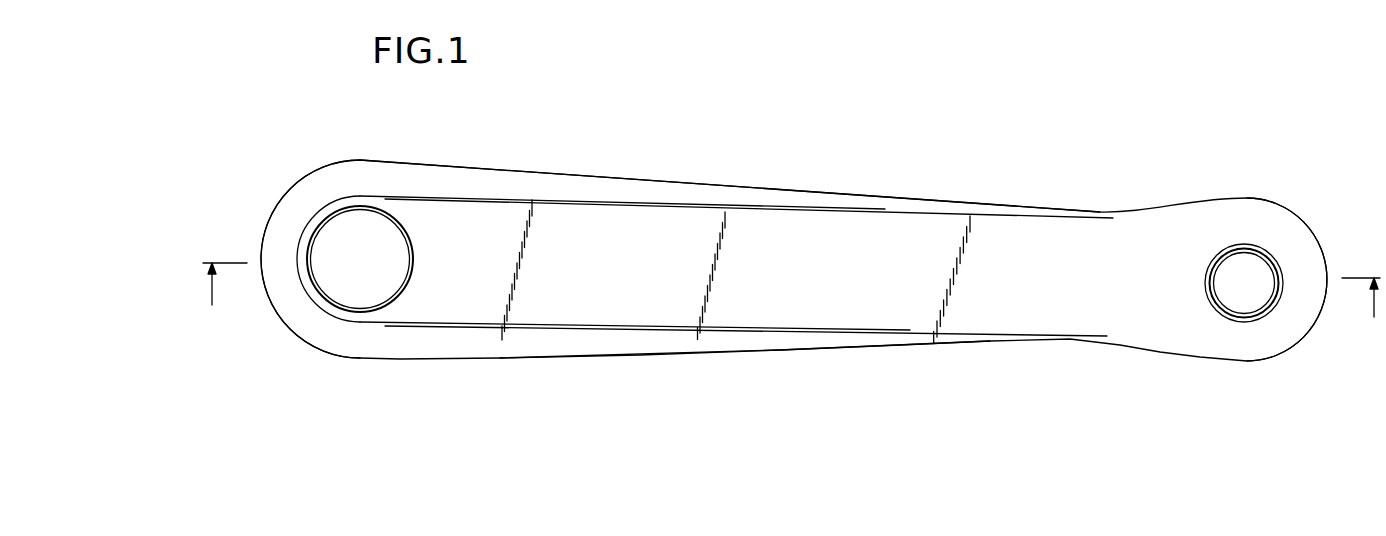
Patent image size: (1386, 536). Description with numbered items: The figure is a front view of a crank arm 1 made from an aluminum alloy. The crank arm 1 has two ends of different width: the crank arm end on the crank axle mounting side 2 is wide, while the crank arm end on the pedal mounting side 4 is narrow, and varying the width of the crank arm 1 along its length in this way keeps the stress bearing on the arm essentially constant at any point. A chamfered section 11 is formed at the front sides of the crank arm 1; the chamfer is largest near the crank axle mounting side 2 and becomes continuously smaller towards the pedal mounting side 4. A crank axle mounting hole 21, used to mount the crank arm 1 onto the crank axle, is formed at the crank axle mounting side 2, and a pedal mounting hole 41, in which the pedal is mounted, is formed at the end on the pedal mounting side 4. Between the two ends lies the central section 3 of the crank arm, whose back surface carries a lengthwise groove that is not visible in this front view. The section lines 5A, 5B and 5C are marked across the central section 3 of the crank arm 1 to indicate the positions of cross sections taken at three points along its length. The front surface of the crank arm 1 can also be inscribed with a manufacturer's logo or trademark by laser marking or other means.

The crank arm 1 is at (728, 180).
The chamfered section 11 is at (491, 170).
The crank axle mounting side 2 is at (318, 351).
The crank axle mounting hole 21 is at (312, 247).
The central section 3 is at (748, 352).
The pedal mounting side 4 is at (1265, 361).
The pedal mounting hole 41 is at (1282, 278).
The section line 5A is at (614, 168).
The section line 5B is at (820, 172).
The section line 5C is at (1019, 187).